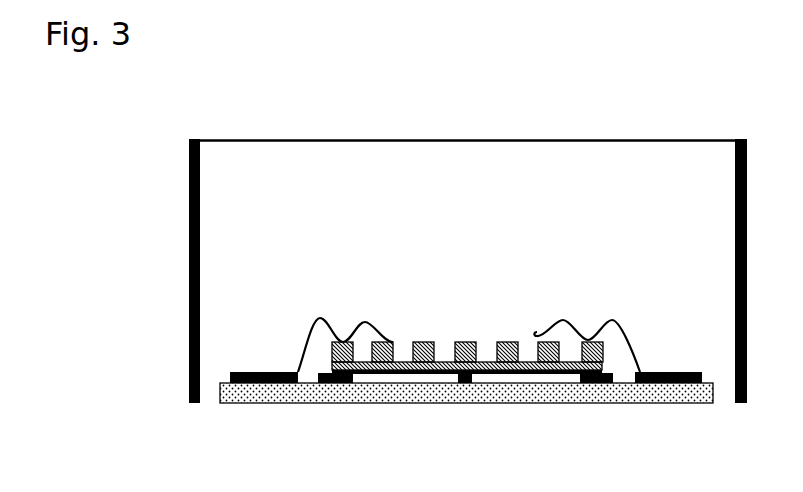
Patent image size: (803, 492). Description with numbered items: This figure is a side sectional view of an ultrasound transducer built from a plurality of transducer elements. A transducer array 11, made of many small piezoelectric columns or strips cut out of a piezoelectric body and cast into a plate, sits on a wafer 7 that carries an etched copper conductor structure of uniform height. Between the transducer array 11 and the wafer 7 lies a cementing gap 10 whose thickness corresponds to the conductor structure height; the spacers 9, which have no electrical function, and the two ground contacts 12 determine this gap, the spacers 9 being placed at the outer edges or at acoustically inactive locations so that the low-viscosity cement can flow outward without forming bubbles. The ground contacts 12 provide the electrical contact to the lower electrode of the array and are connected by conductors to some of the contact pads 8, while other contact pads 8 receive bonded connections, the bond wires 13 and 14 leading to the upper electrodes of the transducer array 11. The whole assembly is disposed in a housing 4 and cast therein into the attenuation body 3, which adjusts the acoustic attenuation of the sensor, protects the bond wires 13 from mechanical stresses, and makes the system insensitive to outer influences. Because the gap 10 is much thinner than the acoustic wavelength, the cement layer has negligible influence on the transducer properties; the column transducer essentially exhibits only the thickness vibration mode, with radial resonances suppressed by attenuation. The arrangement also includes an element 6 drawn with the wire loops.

The attenuation body 3 is at (405, 208).
The housing 4 is at (189, 253).
The bond wires 6 is at (317, 318).
The wafer 7 is at (405, 404).
The contact pads 8 is at (396, 418).
The spacers 9 is at (331, 383).
The cementing gap 10 is at (393, 372).
The transducer array 11 is at (391, 343).
The ground contacts 12 is at (476, 368).
The bond wires 13 is at (396, 418).
The terminal 14 is at (247, 383).